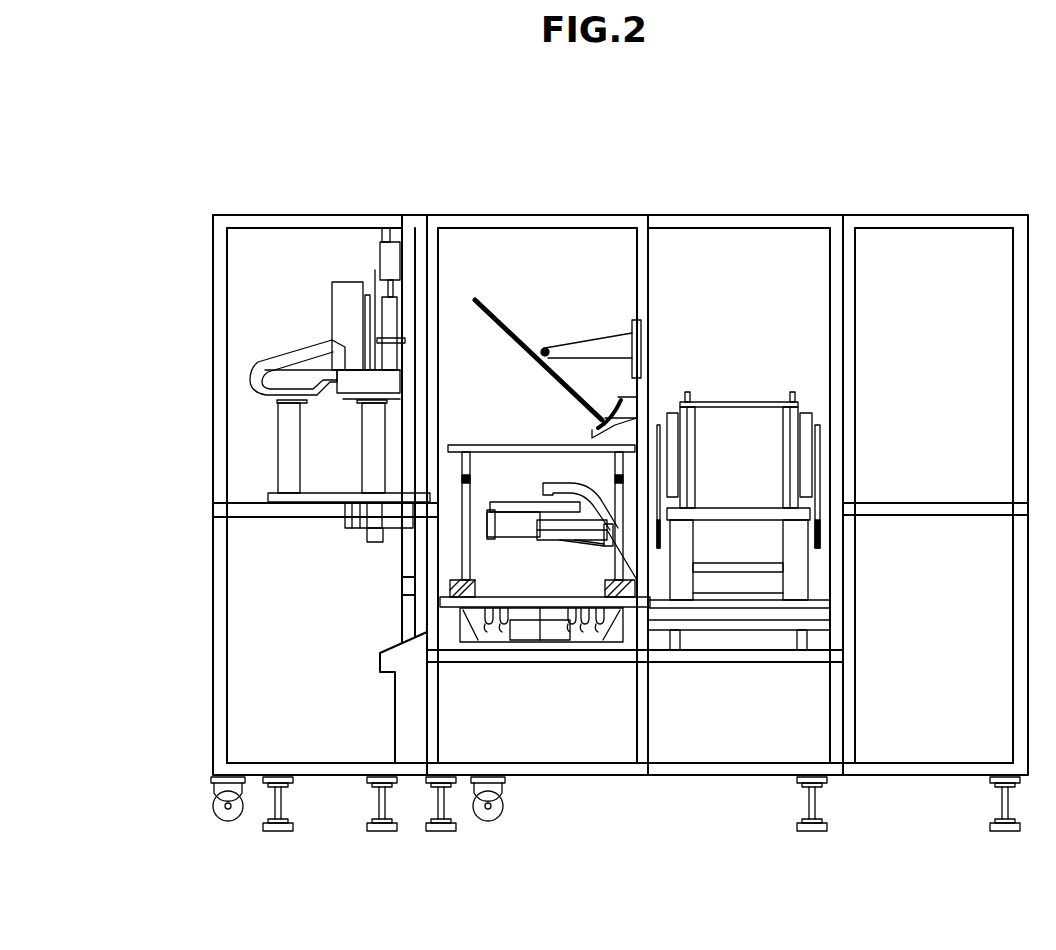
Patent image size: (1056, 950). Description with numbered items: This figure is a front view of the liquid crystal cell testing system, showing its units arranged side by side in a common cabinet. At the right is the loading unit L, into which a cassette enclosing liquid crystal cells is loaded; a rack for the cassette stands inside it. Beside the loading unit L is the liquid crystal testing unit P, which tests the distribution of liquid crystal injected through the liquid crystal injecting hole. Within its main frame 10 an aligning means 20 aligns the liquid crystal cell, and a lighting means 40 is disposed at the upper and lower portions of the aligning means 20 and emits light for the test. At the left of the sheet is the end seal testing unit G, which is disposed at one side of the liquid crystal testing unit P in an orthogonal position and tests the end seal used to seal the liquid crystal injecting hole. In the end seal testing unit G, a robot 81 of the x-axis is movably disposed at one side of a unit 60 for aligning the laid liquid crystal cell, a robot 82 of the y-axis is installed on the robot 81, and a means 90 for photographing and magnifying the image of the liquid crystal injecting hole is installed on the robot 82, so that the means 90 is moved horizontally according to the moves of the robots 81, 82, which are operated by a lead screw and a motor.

The main frame 10 is at (557, 642).
The aligning means 20 is at (522, 478).
The lighting means 40 is at (490, 642).
The unit for aligning the laid liquid crystal cell 60 is at (350, 548).
The robot of x-axis 81 is at (292, 468).
The robot of y-axis 82 is at (300, 352).
The means for photographing and magnifying 90 is at (382, 226).
The end seal testing unit G is at (203, 432).
The loading unit L is at (703, 742).
The liquid crystal testing unit P is at (550, 758).